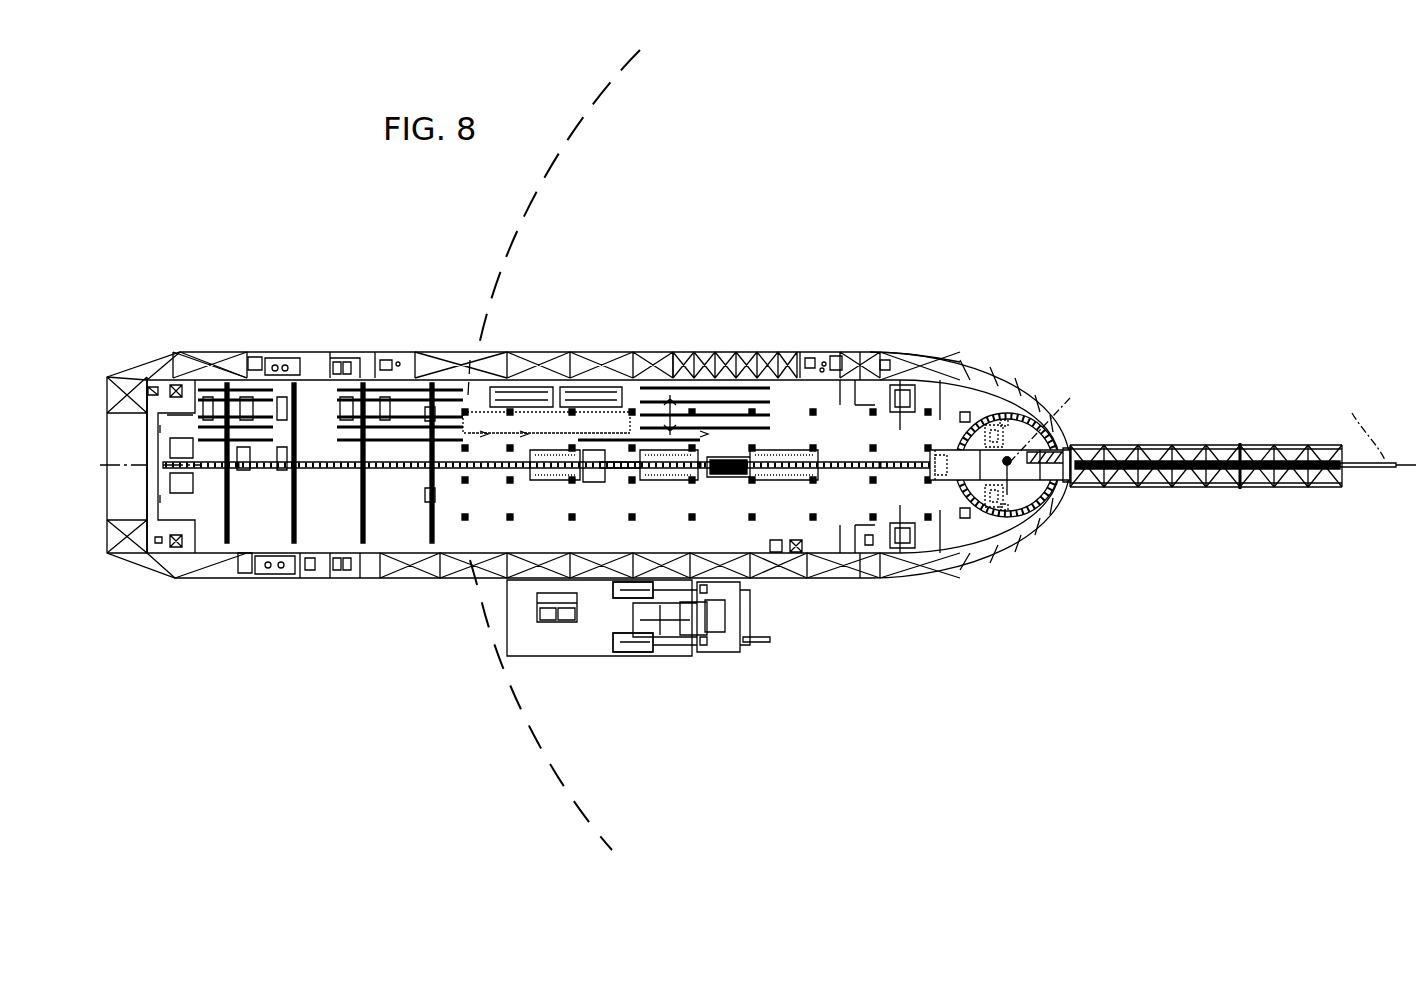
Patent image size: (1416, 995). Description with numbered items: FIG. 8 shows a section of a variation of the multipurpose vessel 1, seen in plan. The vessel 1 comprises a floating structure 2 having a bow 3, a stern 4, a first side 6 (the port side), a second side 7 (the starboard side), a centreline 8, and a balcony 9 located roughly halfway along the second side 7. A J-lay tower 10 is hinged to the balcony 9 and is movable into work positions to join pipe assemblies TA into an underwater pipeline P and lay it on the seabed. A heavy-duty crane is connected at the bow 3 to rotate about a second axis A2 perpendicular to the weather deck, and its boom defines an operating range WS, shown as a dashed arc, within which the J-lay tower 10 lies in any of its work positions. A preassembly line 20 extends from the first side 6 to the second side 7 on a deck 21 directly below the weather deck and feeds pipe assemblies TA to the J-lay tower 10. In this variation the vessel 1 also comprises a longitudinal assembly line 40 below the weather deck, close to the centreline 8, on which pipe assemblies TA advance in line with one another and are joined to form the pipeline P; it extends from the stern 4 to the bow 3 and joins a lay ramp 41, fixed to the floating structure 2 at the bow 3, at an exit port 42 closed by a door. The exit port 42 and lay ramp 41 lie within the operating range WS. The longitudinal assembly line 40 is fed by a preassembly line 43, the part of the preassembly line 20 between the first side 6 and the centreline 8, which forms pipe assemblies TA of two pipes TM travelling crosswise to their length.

The vessel 1 is at (1012, 294).
The floating structure 2 is at (912, 355).
The bow 3 is at (1066, 503).
The stern 4 is at (226, 595).
The first side 6 is at (748, 350).
The second side 7 is at (469, 582).
The centreline 8 is at (1366, 424).
The balcony 9 is at (560, 652).
The J-lay tower 10 is at (748, 659).
The preassembly line 20 is at (251, 524).
The deck 21 is at (813, 527).
The longitudinal assembly line 40 is at (653, 486).
The lay ramp 41 is at (1223, 445).
The exit port 42 is at (1072, 442).
The preassembly line 43 is at (432, 362).
The operating range WS is at (489, 260).
The pipes TM is at (718, 387).
The pipe assemblies TA is at (317, 470).
The second axis A2 is at (1051, 418).
The pipeline P is at (1353, 470).